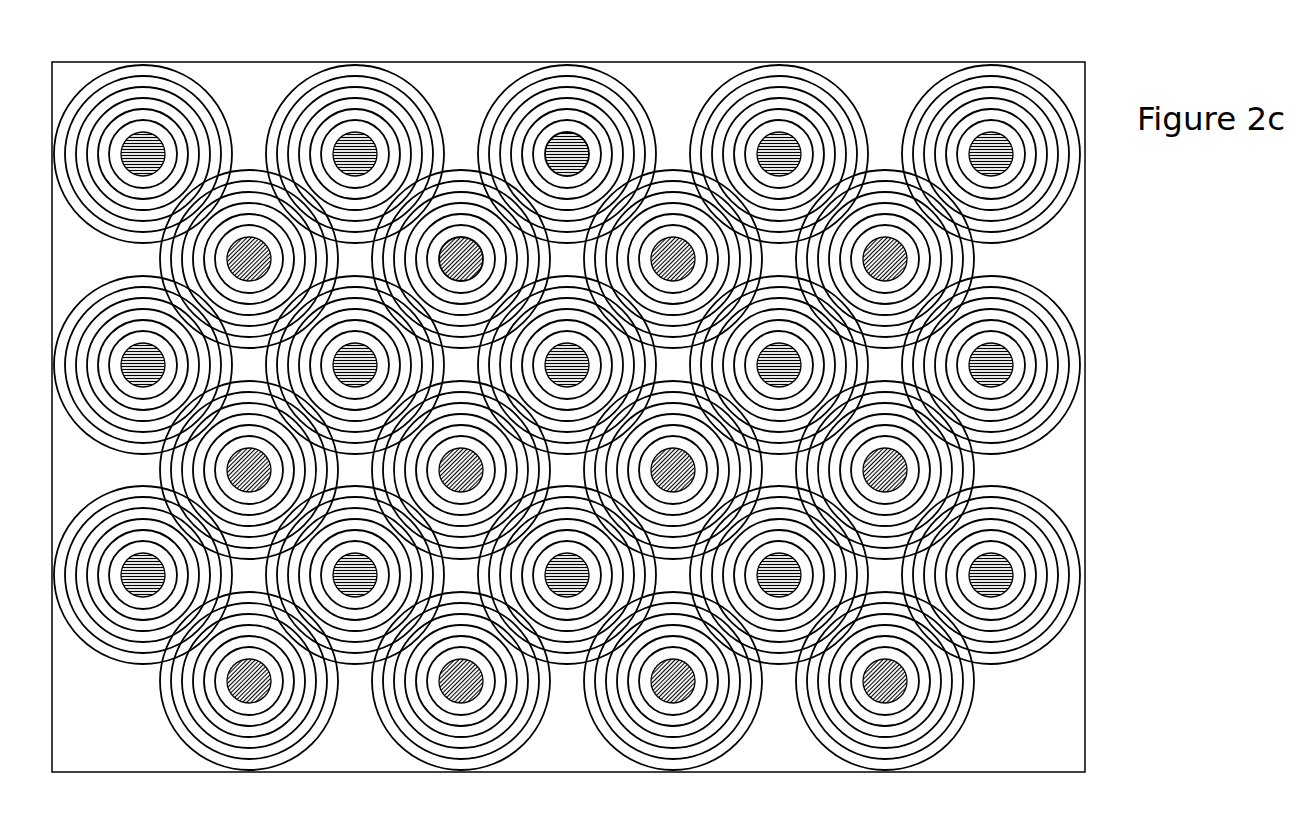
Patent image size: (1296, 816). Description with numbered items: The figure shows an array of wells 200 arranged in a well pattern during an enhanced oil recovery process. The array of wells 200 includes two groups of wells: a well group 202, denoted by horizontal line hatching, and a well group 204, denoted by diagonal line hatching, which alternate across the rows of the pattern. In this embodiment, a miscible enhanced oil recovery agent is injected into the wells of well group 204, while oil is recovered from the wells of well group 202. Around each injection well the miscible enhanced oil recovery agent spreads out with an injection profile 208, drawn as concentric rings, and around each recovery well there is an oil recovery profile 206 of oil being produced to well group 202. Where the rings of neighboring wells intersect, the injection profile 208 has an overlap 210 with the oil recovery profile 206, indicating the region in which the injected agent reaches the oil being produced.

The array of wells 200 is at (234, 49).
The well group 202 is at (560, 115).
The well group 204 is at (442, 226).
The oil recovery profile 206 is at (622, 103).
The injection profile 208 is at (459, 202).
The overlap 210 is at (502, 186).